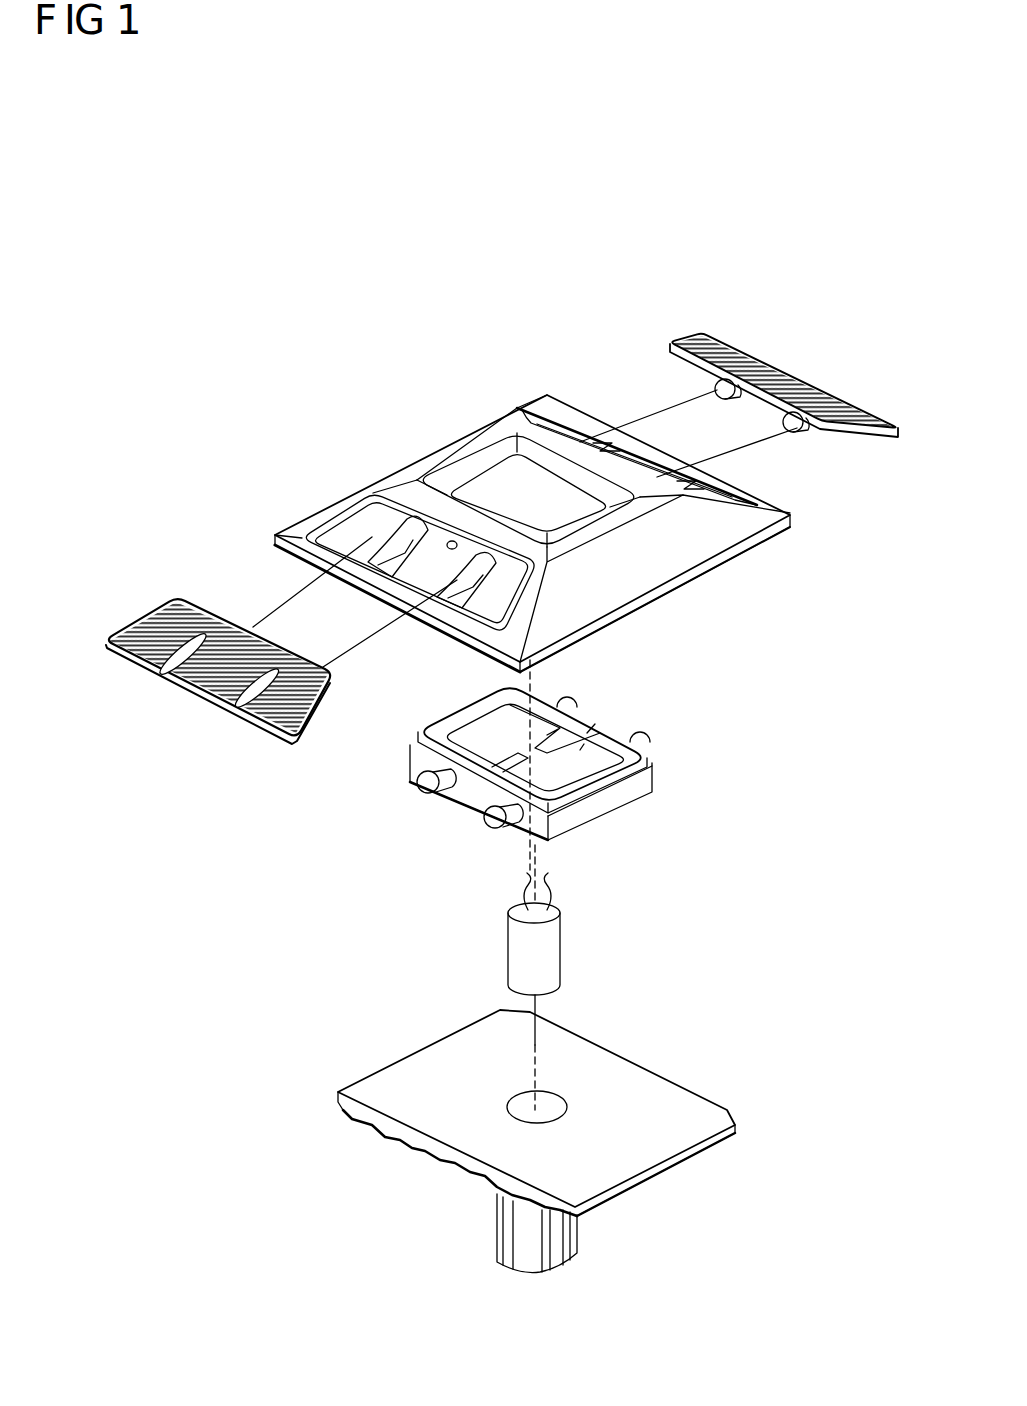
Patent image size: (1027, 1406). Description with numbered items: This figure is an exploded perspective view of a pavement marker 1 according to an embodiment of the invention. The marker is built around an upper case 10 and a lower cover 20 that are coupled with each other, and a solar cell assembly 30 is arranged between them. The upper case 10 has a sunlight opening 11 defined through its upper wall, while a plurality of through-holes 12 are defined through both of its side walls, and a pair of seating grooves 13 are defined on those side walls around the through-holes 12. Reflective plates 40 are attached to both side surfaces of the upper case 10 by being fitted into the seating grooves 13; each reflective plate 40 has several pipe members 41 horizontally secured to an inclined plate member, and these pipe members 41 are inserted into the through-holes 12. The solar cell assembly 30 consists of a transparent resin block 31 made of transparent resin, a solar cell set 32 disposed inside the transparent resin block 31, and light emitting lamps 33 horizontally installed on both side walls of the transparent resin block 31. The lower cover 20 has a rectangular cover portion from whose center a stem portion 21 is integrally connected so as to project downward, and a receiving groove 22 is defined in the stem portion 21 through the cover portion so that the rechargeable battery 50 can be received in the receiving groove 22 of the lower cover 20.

The pavement marker 1 is at (495, 345).
The upper case 10 is at (298, 492).
The sunlight opening 11 is at (512, 433).
The through-holes 12 is at (385, 560).
The seating grooves 13 is at (353, 538).
The lower cover 20 is at (660, 1172).
The stem portion 21 is at (502, 1235).
The receiving groove 22 is at (545, 1105).
The solar cell assembly 30 is at (375, 775).
The transparent resin block 31 is at (613, 797).
The solar cell set 32 is at (597, 722).
The light emitting lamps 33 is at (420, 787).
The reflective plates 40 is at (793, 357).
The pipe members 41 is at (793, 430).
The rechargeable battery 50 is at (587, 950).